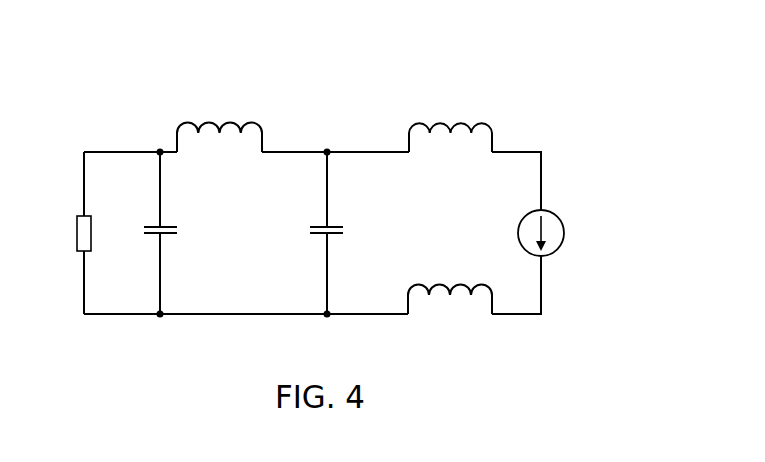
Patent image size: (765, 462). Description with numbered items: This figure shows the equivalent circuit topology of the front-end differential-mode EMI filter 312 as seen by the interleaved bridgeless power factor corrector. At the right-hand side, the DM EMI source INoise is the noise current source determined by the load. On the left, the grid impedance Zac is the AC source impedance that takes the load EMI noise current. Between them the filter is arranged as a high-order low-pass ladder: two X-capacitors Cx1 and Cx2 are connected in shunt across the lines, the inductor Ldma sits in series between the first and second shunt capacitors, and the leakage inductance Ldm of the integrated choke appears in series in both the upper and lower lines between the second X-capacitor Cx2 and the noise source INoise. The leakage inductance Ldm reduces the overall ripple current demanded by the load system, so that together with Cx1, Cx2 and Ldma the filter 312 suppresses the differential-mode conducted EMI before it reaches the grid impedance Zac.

The front-end DM EMI filter 312 is at (392, 62).
The grid impedance Zac is at (60, 233).
The X-capacitor Cx1 is at (182, 228).
The X-capacitor Cx2 is at (348, 226).
The inductor Ldma is at (219, 118).
The leakage inductance Ldm is at (450, 218).
The DM EMI source INoise is at (574, 233).